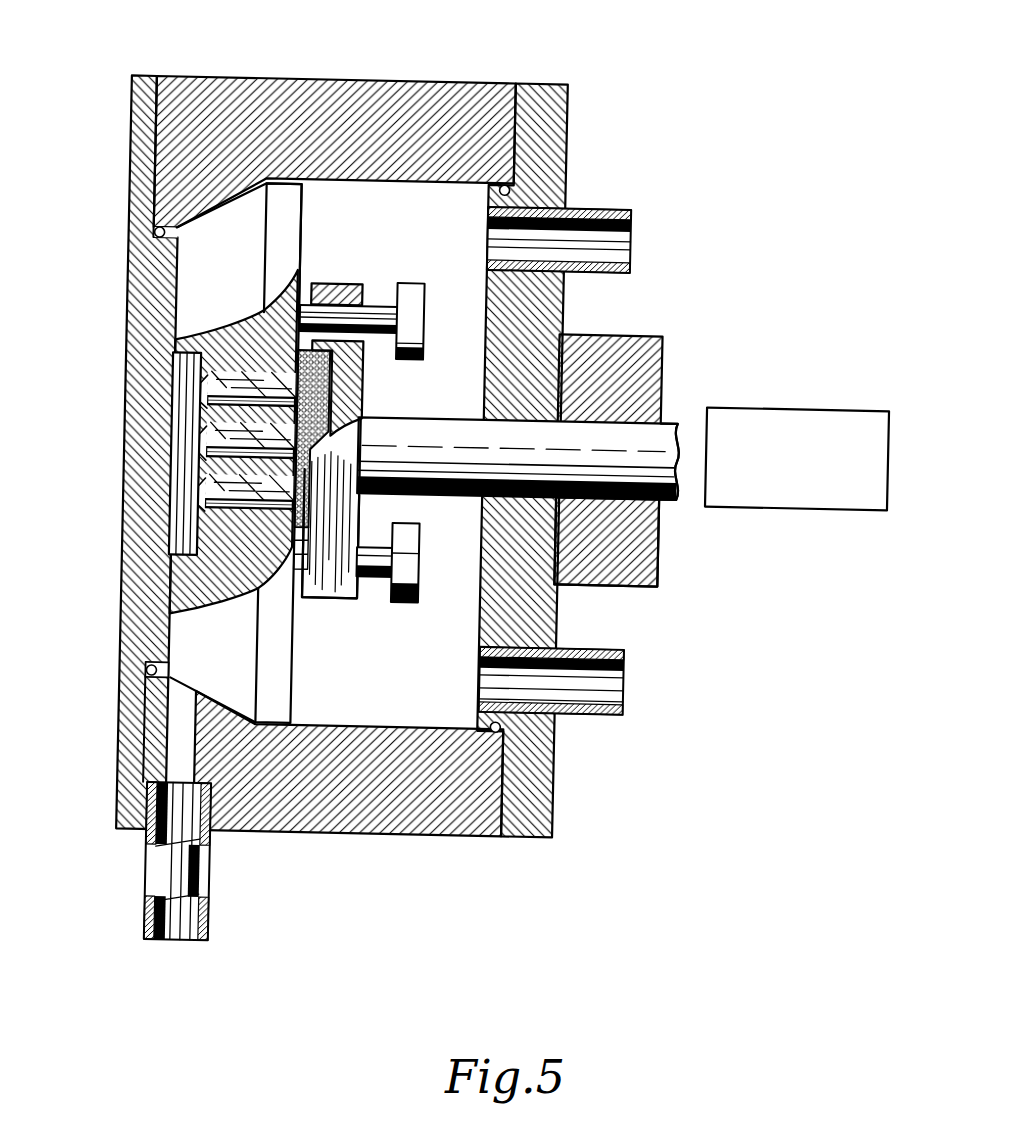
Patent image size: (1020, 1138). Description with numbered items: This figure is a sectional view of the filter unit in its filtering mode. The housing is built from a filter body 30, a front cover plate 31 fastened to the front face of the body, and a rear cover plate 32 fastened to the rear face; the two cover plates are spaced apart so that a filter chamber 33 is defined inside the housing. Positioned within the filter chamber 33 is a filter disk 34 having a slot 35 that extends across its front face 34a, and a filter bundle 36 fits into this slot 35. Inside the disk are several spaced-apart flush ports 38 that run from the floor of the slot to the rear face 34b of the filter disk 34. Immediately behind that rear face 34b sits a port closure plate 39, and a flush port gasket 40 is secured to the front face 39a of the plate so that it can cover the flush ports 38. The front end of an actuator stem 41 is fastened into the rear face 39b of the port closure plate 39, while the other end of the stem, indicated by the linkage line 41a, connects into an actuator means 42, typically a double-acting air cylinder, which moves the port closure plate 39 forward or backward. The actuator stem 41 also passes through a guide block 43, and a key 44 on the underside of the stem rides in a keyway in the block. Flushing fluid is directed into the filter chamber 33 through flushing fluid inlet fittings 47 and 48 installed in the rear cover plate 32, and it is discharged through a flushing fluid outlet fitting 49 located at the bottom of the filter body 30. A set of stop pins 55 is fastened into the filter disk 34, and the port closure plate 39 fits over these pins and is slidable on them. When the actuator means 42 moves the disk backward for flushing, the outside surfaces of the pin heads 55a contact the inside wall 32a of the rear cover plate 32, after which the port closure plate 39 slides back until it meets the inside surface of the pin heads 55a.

The filter body 30 is at (361, 418).
The front cover plate 31 is at (109, 452).
The rear cover plate 32 is at (576, 455).
The inside wall 32a is at (539, 460).
The filter chamber 33 is at (355, 421).
The filter disk 34 is at (210, 454).
The front face 34a is at (100, 662).
The rear face 34b is at (331, 249).
The slot 35 is at (170, 447).
The filter bundle 36 is at (118, 447).
The flush ports 38 is at (180, 440).
The port closure plate 39 is at (370, 408).
The front face 39a is at (353, 261).
The rear face 39b is at (368, 547).
The flush port gasket 40 is at (350, 460).
The actuator stem 41 is at (555, 394).
The linkage line 41a is at (706, 427).
The actuator means 42 is at (797, 495).
The guide block 43 is at (651, 500).
The key 44 is at (645, 542).
The flushing fluid inlet fitting 47 is at (597, 210).
The flushing fluid inlet fitting 48 is at (601, 725).
The flushing fluid outlet fitting 49 is at (136, 865).
The stop pins 55 is at (385, 456).
The pin heads 55a is at (385, 475).